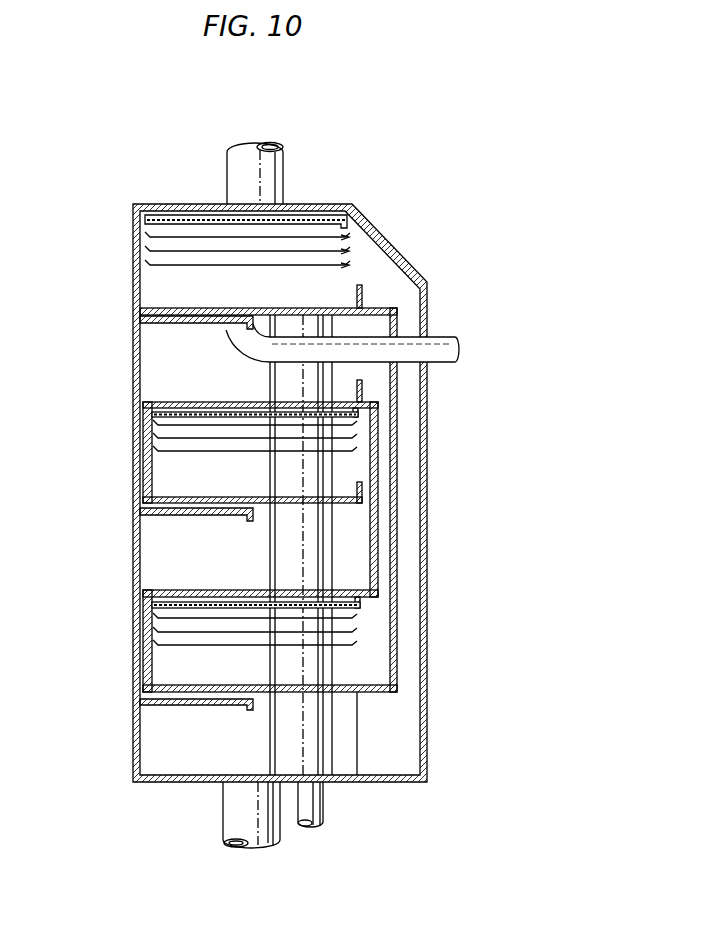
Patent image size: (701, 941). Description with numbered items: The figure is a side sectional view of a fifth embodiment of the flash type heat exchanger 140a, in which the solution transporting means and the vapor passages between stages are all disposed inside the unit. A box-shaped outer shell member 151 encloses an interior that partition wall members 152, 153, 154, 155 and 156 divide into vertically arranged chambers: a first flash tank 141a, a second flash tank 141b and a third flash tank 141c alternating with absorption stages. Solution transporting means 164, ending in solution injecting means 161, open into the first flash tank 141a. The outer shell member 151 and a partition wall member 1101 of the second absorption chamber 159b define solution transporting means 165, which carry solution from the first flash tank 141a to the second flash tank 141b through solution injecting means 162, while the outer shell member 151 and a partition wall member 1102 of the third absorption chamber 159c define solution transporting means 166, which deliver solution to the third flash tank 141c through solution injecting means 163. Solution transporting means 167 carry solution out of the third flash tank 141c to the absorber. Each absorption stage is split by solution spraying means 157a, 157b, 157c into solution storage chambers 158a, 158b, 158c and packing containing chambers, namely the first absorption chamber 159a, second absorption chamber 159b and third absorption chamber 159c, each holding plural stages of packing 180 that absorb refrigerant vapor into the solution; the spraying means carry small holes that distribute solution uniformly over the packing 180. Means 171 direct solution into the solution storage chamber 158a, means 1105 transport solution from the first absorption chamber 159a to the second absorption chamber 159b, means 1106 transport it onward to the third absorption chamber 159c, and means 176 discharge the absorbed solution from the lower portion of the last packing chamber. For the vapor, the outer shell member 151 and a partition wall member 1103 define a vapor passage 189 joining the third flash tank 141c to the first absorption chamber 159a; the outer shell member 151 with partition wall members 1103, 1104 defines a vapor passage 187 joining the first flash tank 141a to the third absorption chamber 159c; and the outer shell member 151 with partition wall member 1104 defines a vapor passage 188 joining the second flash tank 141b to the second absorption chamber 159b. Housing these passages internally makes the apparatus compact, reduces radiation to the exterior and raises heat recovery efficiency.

The flash type heat exchanger 140a is at (336, 172).
The outer shell member 151 is at (173, 204).
The partition wall member 152 is at (152, 308).
The partition wall member 153 is at (184, 402).
The partition wall member 154 is at (337, 497).
The partition wall member 155 is at (186, 590).
The partition wall member 156 is at (370, 692).
The solution spraying means 157a is at (150, 218).
The solution spraying means 157b is at (148, 417).
The solution spraying means 157c is at (155, 615).
The solution storage chamber 158a is at (336, 210).
The solution storage chamber 158b is at (240, 412).
The solution storage chamber 158c is at (255, 602).
The first absorption chamber (packing containing chamber) 159a is at (200, 288).
The second absorption chamber (packing containing chamber) 159b is at (180, 477).
The third absorption chamber (packing containing chamber) 159c is at (198, 667).
The solution injecting means 161 is at (152, 322).
The solution injecting means 162 is at (216, 513).
The solution injecting means 163 is at (150, 705).
The solution transporting means 164 is at (443, 345).
The solution transporting means 165 is at (143, 432).
The solution transporting means 166 is at (143, 640).
The solution transporting means 167 is at (230, 817).
The means for directing solution 171 is at (233, 160).
The means for discharging solution 176 is at (330, 745).
The packing 180 is at (353, 257).
The vapor passage 187 is at (384, 468).
The vapor passage 188 is at (365, 540).
The vapor passage 189 is at (412, 402).
The first flash tank 141a is at (172, 345).
The second flash tank 141b is at (167, 532).
The third flash tank 141c is at (177, 742).
The partition wall member 1101 is at (148, 460).
The partition wall member 1102 is at (147, 675).
The partition wall member 1103 is at (396, 368).
The partition wall member 1104 is at (374, 433).
The means for transporting solution 1105 is at (308, 320).
The means for transporting solution 1106 is at (290, 510).